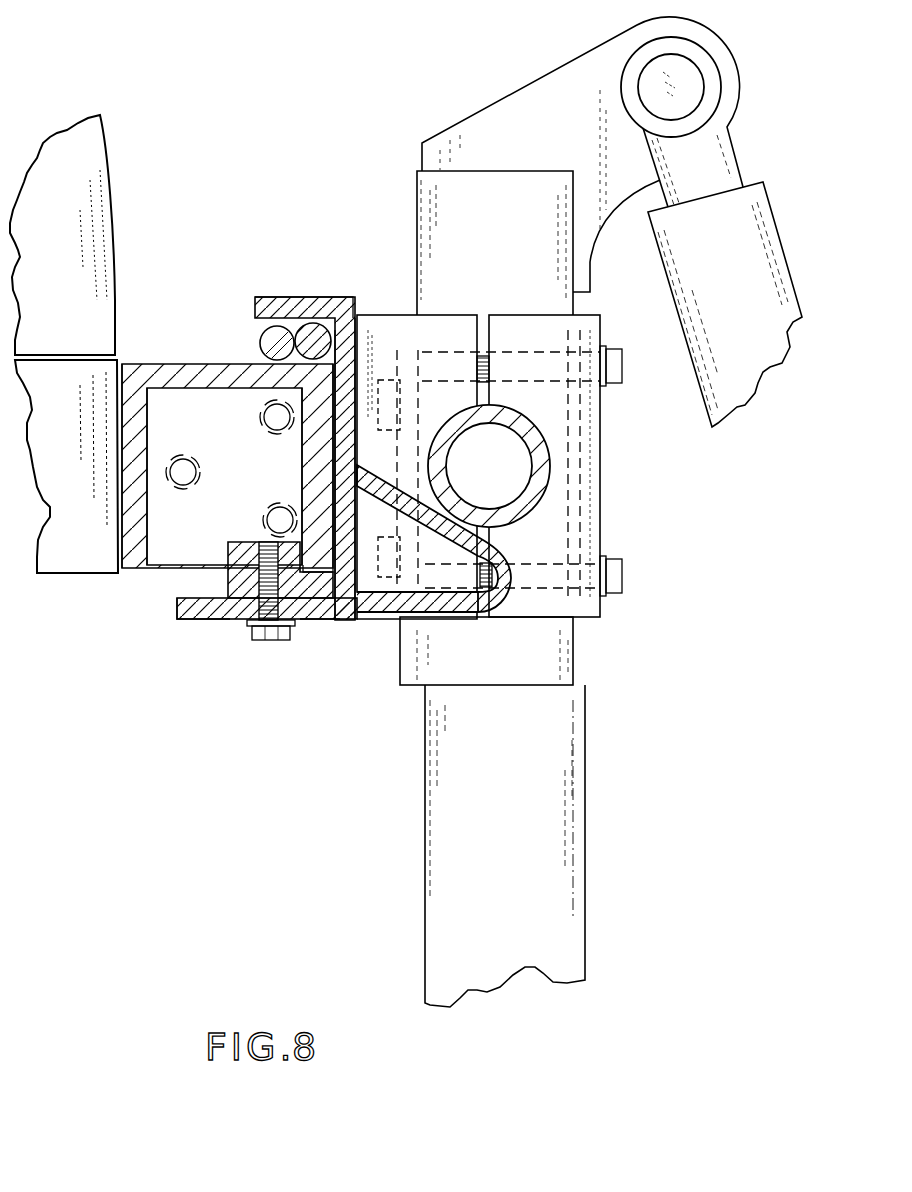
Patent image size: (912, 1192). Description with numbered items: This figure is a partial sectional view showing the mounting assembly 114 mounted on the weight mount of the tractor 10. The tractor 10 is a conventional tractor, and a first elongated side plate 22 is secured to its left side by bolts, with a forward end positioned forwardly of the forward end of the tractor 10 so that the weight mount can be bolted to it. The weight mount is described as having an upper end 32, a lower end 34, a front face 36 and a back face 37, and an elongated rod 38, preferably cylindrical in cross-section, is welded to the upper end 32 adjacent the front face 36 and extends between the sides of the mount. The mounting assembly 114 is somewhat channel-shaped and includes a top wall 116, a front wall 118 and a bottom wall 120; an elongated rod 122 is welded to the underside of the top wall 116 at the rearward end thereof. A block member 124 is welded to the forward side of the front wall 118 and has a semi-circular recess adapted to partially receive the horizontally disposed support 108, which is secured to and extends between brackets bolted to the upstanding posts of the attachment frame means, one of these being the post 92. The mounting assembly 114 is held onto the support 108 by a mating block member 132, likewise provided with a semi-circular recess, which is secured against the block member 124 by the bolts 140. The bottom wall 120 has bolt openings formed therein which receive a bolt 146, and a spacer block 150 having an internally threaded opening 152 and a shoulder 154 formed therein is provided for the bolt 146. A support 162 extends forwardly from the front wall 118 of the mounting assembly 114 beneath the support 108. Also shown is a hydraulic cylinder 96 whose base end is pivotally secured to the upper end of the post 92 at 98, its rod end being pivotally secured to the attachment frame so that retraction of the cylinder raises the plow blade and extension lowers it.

The tractor 10 is at (124, 115).
The first elongated side plate 22 is at (212, 434).
The upper end 32 is at (196, 362).
The lower end 34 is at (137, 570).
The front face 36 is at (318, 445).
The back face 37 is at (140, 505).
The elongated rod 38 is at (312, 310).
The upstanding post 92 is at (547, 798).
The hydraulic cylinder 96 is at (753, 277).
The pivotal connection 98 is at (682, 82).
The horizontally disposed support 108 is at (540, 463).
The mounting assembly 114 is at (322, 624).
The top wall 116 is at (287, 300).
The front wall 118 is at (345, 472).
The bottom wall 120 is at (218, 621).
The elongated rod 122 is at (262, 338).
The block member 124 is at (436, 316).
The block member 132 is at (540, 313).
The bolts 140 is at (620, 358).
The bolt 146 is at (272, 642).
The spacer block 150 is at (260, 577).
The internally threaded opening 152 is at (199, 619).
The shoulder 154 is at (375, 623).
The support 162 is at (505, 582).